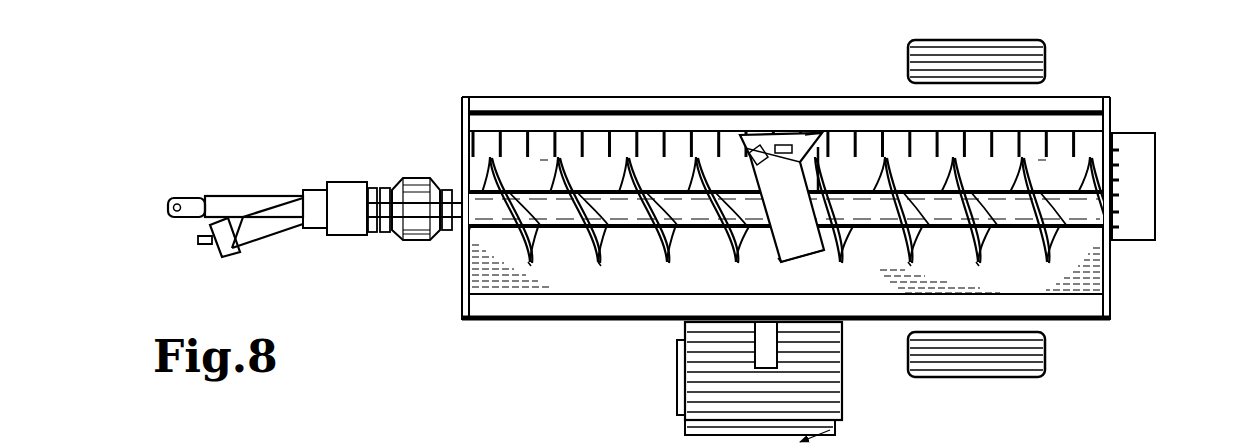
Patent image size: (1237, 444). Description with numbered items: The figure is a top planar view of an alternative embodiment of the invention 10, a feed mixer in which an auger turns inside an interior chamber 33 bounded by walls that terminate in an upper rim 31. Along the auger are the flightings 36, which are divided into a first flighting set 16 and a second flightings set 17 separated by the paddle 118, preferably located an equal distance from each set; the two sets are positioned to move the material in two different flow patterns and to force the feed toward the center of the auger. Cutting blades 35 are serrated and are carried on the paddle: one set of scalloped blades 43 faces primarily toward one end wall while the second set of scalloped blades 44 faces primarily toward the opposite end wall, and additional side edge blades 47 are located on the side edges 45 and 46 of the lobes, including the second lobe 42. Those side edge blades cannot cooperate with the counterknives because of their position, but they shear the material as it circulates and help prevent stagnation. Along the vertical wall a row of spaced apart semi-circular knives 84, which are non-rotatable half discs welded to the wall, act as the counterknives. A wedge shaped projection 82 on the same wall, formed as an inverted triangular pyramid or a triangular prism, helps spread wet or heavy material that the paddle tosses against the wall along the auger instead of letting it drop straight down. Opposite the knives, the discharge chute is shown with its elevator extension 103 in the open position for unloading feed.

The invention 10 is at (1160, 443).
The first flighting set 16 is at (791, 212).
The second flightings set 17 is at (1043, 258).
The upper rim 31 is at (722, 100).
The interior chamber 33 is at (573, 253).
The cutting blades 35 is at (528, 258).
The flightings 36 is at (540, 172).
The second lobe 42 is at (795, 158).
The first set of scalloped blades 43 is at (768, 177).
The second set of scalloped blades 44 is at (813, 252).
The side edge 45 is at (772, 254).
The side edge 46 is at (815, 133).
The side edge blades 47 is at (782, 263).
The wedge shaped projection 82 is at (778, 135).
The semi-circular knives 84 is at (580, 135).
The elevator extension 103 is at (850, 408).
The paddle 118 is at (707, 115).